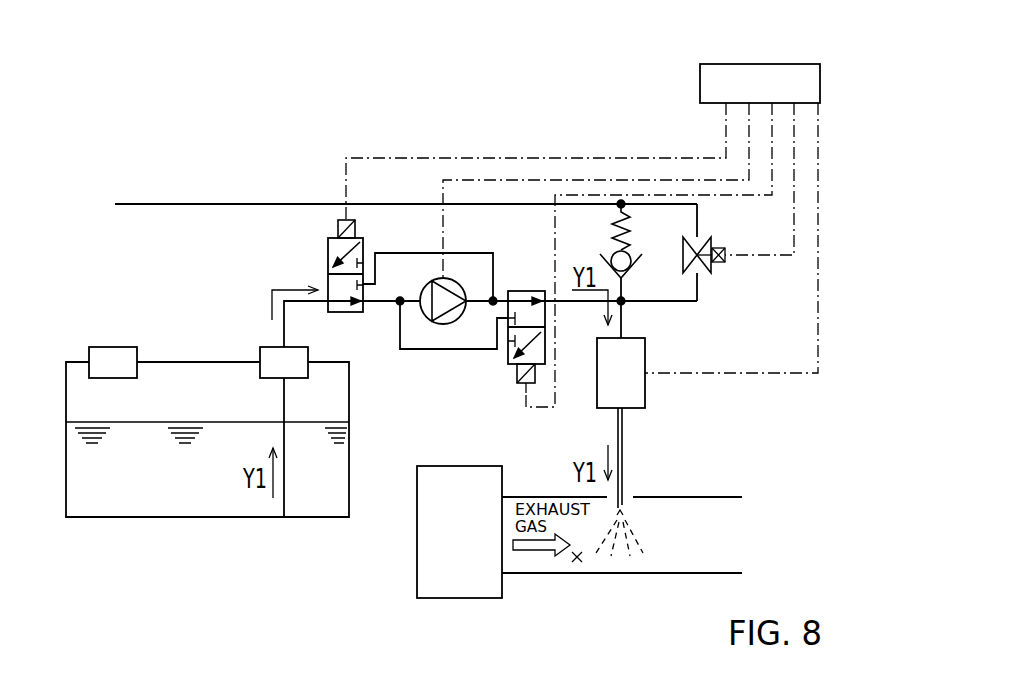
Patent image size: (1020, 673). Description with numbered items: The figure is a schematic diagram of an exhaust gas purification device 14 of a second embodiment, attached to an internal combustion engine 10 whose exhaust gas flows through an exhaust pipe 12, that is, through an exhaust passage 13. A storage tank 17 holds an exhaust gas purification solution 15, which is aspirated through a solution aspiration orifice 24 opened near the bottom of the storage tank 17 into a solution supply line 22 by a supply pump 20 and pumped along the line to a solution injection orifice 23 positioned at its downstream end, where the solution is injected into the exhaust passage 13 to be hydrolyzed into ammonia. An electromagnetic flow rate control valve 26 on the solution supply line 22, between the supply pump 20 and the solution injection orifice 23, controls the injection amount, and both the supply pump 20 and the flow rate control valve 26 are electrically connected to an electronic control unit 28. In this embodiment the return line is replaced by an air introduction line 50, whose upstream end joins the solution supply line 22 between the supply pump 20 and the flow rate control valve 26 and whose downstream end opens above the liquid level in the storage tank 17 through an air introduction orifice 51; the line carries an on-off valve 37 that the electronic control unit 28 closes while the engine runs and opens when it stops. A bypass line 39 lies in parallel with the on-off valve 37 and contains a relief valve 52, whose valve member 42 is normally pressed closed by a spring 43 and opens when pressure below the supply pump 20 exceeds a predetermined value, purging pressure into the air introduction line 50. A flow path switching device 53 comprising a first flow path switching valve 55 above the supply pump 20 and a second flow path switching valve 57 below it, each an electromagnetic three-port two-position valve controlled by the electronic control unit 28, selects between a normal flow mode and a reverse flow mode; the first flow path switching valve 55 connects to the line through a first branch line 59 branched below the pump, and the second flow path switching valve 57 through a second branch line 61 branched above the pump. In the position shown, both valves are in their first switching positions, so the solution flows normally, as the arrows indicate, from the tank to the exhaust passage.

The internal combustion engine 10 is at (457, 480).
The exhaust pipe 12 is at (680, 497).
The exhaust passage 13 is at (578, 562).
The exhaust gas purification device 14 is at (406, 147).
The exhaust gas purification solution 15 is at (168, 490).
The storage tank 17 is at (66, 378).
The supply pump 20 is at (433, 342).
The solution supply line 22 is at (282, 334).
The solution injection orifice 23 is at (622, 505).
The solution aspiration orifice 24 is at (284, 518).
The flow rate control valve 26 is at (603, 393).
The electronic control unit 28 is at (788, 63).
The on-off valve 37 is at (722, 289).
The bypass line 39 is at (623, 293).
The valve member 42 is at (640, 256).
The spring 43 is at (624, 238).
The air introduction line 50 is at (110, 238).
The air introduction orifice 51 is at (110, 420).
The relief valve 52 is at (605, 194).
The flow path switching device 53 is at (279, 258).
The first flow path switching valve 55 is at (274, 278).
The second flow path switching valve 57 is at (530, 306).
The first branch line 59 is at (463, 253).
The second branch line 61 is at (477, 350).